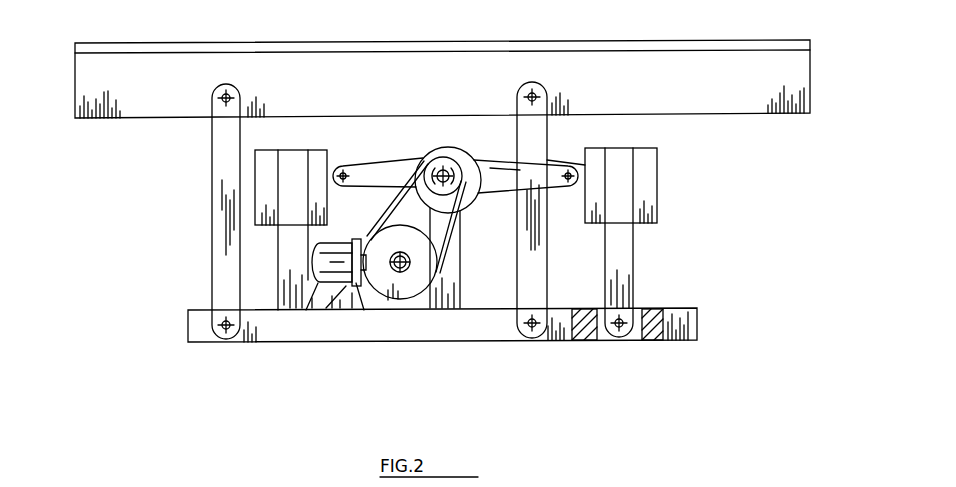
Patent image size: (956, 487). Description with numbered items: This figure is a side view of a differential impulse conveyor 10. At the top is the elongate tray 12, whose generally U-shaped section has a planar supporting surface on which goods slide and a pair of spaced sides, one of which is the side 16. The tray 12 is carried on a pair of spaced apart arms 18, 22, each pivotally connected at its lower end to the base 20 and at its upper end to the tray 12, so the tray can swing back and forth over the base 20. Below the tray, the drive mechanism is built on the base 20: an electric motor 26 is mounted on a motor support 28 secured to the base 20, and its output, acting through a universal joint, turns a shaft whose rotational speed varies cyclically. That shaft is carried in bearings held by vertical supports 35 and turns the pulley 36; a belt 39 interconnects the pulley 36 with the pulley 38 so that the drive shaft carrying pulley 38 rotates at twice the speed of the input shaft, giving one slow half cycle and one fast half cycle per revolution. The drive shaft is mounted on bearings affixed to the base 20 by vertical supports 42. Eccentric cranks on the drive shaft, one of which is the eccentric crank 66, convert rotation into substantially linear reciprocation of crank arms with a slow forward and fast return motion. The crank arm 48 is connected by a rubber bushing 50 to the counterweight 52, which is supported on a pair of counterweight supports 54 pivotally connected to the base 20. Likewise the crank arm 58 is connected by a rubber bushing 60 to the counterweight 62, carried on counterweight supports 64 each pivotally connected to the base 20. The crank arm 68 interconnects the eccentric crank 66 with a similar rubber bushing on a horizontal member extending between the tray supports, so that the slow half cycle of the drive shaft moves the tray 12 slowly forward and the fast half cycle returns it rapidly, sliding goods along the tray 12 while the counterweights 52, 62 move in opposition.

The differential impulse conveyor 10 is at (157, 252).
The elongate tray 12 is at (693, 102).
The side 16 is at (692, 68).
The arm 18 is at (533, 138).
The base 20 is at (566, 330).
The arm 22 is at (210, 159).
The electric motor 26 is at (313, 287).
The motor support 28 is at (327, 300).
The vertical supports 35 is at (388, 300).
The pulley 36 is at (425, 255).
The pulley 38 is at (428, 156).
The drive belt 39 is at (390, 207).
The vertical supports 42 is at (460, 292).
The crank arm 48 is at (550, 160).
The rubber bushing 50 is at (568, 180).
The counterweight 52 is at (650, 182).
The counterweight supports 54 is at (617, 248).
The crank arm 58 is at (388, 172).
The rubber bushing 60 is at (343, 172).
The counterweight 62 is at (318, 157).
The counterweight supports 64 is at (278, 295).
The eccentric crank 66 is at (481, 170).
The crank arm 68 is at (500, 172).